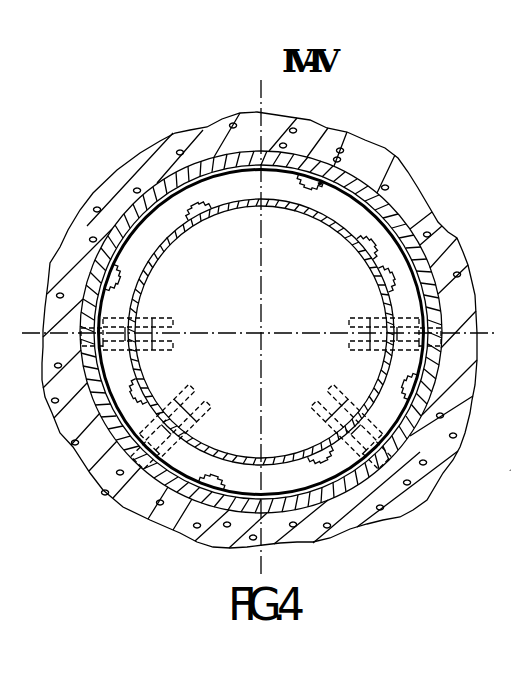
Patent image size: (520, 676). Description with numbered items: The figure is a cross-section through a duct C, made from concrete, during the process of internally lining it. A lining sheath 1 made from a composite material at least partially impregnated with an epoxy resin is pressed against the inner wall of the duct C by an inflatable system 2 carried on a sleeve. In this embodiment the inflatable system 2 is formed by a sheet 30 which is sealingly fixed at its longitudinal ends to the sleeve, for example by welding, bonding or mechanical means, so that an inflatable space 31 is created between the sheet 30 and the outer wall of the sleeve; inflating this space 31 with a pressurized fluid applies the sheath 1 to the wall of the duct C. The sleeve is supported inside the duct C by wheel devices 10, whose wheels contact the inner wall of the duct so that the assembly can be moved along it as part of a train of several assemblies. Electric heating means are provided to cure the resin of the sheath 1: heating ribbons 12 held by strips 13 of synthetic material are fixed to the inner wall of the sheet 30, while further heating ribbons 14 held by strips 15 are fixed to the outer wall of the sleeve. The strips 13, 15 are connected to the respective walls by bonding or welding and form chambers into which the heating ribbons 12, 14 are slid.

The duct C is at (157, 177).
The lining sheath 1 is at (353, 187).
The inflatable system 2 is at (388, 243).
The sheet 30 is at (413, 277).
The inflatable space 31 is at (403, 292).
The wheel device 10 is at (422, 351).
The heating ribbon 12 is at (315, 191).
The strip 13 is at (303, 176).
The heating ribbon 14 is at (387, 275).
The strip 15 is at (370, 250).